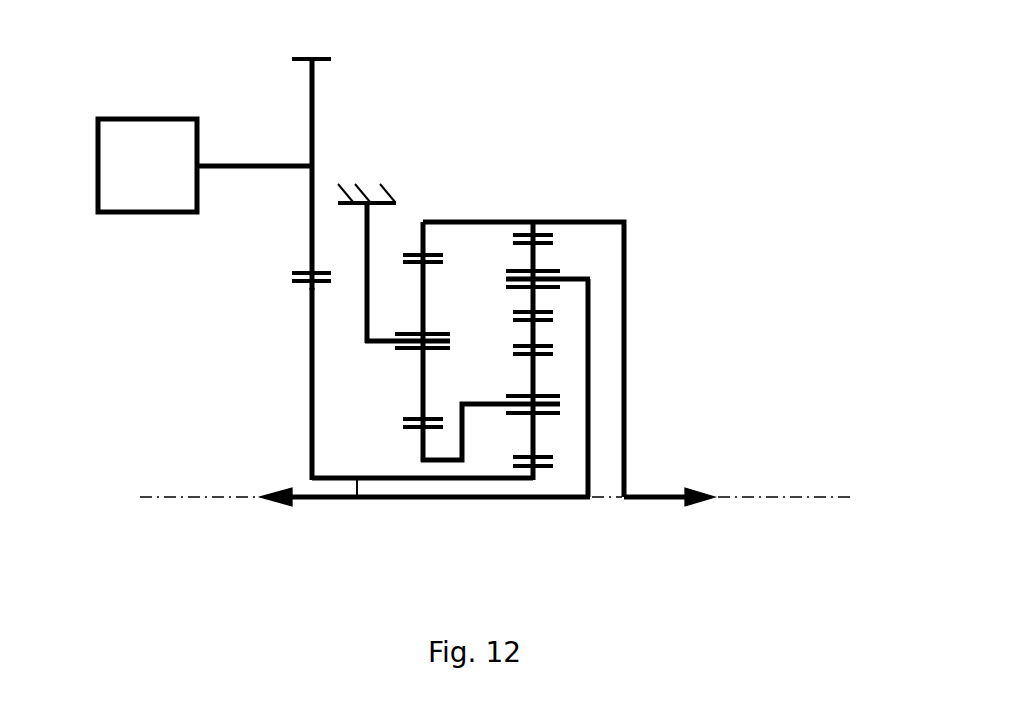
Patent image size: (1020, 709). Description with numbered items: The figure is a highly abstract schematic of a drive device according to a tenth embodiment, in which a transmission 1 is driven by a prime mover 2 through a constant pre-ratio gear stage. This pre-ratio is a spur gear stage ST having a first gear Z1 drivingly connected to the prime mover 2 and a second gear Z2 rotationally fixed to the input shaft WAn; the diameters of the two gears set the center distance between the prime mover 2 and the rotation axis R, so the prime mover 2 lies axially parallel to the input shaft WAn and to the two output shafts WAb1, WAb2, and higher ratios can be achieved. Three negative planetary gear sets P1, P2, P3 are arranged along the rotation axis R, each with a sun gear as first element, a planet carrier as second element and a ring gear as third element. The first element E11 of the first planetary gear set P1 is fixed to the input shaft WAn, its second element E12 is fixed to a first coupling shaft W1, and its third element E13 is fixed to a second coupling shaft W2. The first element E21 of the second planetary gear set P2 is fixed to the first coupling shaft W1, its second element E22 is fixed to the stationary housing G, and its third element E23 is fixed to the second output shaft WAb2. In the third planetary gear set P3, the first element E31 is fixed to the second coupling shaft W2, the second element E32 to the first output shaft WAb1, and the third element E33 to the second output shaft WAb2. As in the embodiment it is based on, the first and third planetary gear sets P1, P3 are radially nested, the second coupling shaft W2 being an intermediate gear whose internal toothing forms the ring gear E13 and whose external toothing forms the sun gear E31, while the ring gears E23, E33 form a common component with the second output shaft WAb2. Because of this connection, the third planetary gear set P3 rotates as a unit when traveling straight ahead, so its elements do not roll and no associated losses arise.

The transmission 1 is at (716, 152).
The prime mover 2 is at (120, 130).
The spur gear stage ST is at (262, 104).
The first gear Z1 is at (310, 234).
The second gear Z2 is at (310, 364).
The housing G is at (368, 184).
The first coupling shaft W1 is at (487, 405).
The second coupling shaft W2 is at (533, 335).
The first planetary gear set P1 is at (569, 508).
The second planetary gear set P2 is at (417, 512).
The third planetary gear set P3 is at (550, 210).
The first element of the first planetary gear set E11 is at (545, 468).
The second element of the first planetary gear set E12 is at (560, 404).
The third element of the first planetary gear set E13 is at (553, 347).
The first element of the second planetary gear set E21 is at (423, 442).
The second element of the second planetary gear set E22 is at (383, 350).
The third element of the second planetary gear set E23 is at (437, 254).
The first element of the third planetary gear set E31 is at (553, 318).
The second element of the third planetary gear set E32 is at (560, 272).
The third element of the third planetary gear set E33 is at (522, 234).
The input shaft WAn is at (357, 497).
The first output shaft WAb1 is at (305, 500).
The second output shaft WAb2 is at (670, 498).
The rotation axis R is at (777, 498).